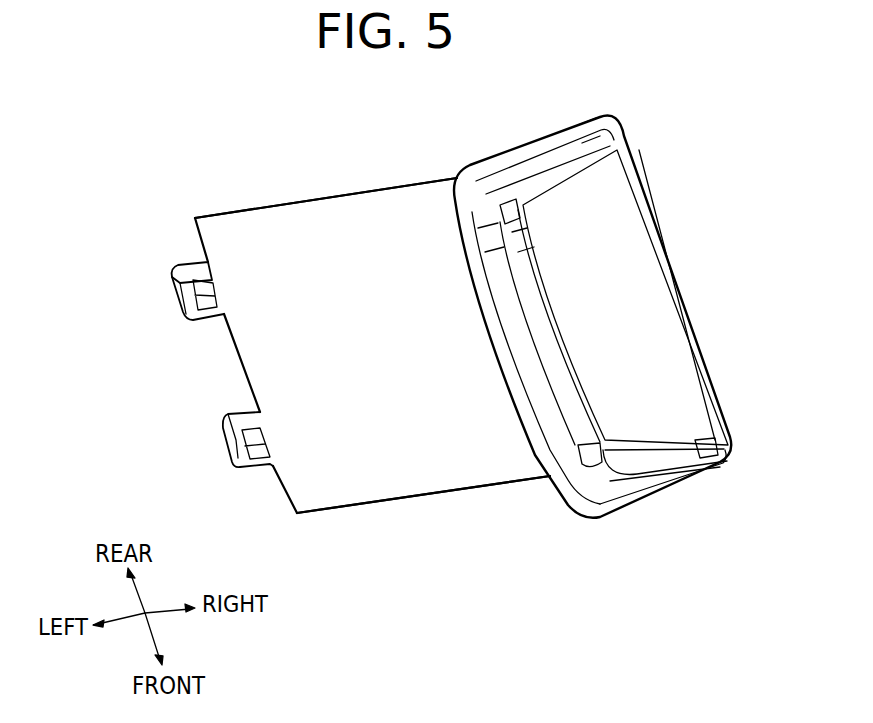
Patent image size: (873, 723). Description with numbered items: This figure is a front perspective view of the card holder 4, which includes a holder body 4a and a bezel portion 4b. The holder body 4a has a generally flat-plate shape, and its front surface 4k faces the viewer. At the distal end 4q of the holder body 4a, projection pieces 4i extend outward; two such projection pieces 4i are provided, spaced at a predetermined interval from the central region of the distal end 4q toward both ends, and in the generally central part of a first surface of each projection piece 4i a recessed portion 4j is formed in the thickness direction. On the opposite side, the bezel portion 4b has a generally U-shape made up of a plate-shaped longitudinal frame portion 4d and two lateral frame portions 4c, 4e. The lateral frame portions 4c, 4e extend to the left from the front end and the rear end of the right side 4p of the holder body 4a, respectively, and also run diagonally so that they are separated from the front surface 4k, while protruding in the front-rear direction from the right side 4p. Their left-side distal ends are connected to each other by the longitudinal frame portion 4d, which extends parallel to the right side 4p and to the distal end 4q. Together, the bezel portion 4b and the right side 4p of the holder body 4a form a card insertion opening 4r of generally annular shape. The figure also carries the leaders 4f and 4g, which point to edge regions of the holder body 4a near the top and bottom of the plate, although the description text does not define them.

The card holder 4 is at (678, 187).
The holder body 4a is at (331, 184).
The bezel portion 4b is at (489, 150).
The lateral frame portion 4c is at (539, 150).
The longitudinal frame portion 4d is at (540, 388).
The lateral frame portion 4e is at (660, 482).
The flange of plate 4f is at (259, 206).
The bottom edge portion of plate 4g is at (395, 503).
The projection piece 4i is at (172, 290).
The recessed portion 4j is at (173, 298).
The front surface 4k is at (390, 368).
The right side 4p is at (703, 355).
The distal end 4q is at (240, 361).
The card insertion opening 4r is at (615, 318).